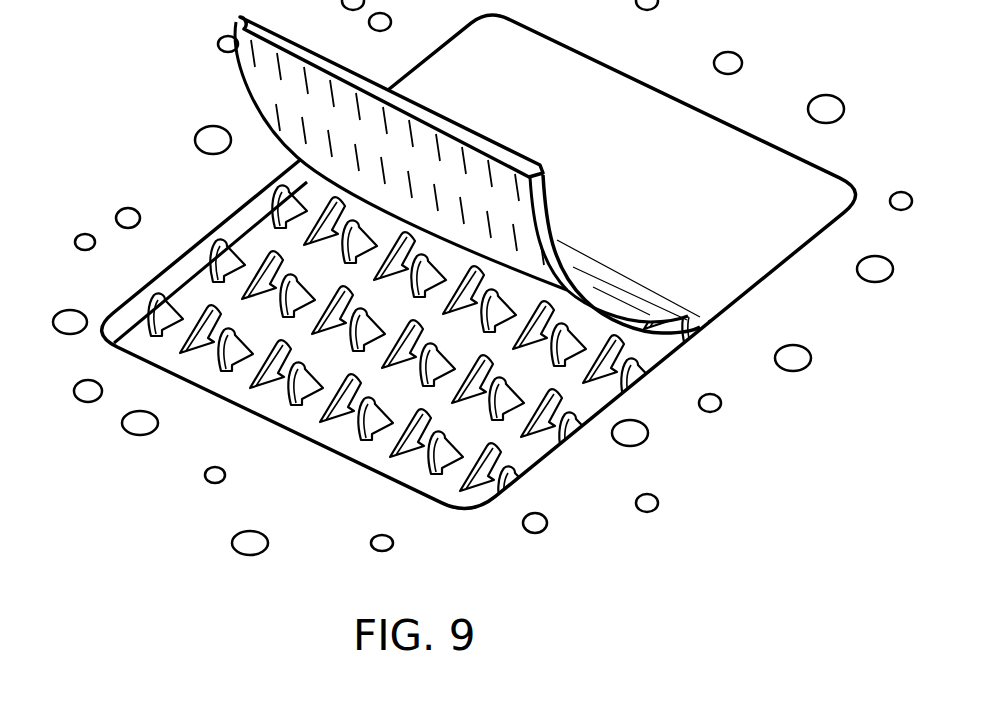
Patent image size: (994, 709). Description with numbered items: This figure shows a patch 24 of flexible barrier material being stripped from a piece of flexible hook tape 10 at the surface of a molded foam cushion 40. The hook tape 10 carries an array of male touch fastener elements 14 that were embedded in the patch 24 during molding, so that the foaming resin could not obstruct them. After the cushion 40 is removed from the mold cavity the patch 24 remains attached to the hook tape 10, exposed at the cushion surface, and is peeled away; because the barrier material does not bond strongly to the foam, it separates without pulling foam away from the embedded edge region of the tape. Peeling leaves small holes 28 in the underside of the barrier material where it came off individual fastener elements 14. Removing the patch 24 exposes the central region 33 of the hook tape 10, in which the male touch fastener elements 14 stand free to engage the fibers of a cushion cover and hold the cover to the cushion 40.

The hook tape 10 is at (130, 343).
The male touch fastener elements 14 is at (367, 440).
The patch 24 is at (608, 147).
The small holes 28 is at (263, 100).
The central region 33 is at (237, 390).
The molded foam cushion 40 is at (156, 191).